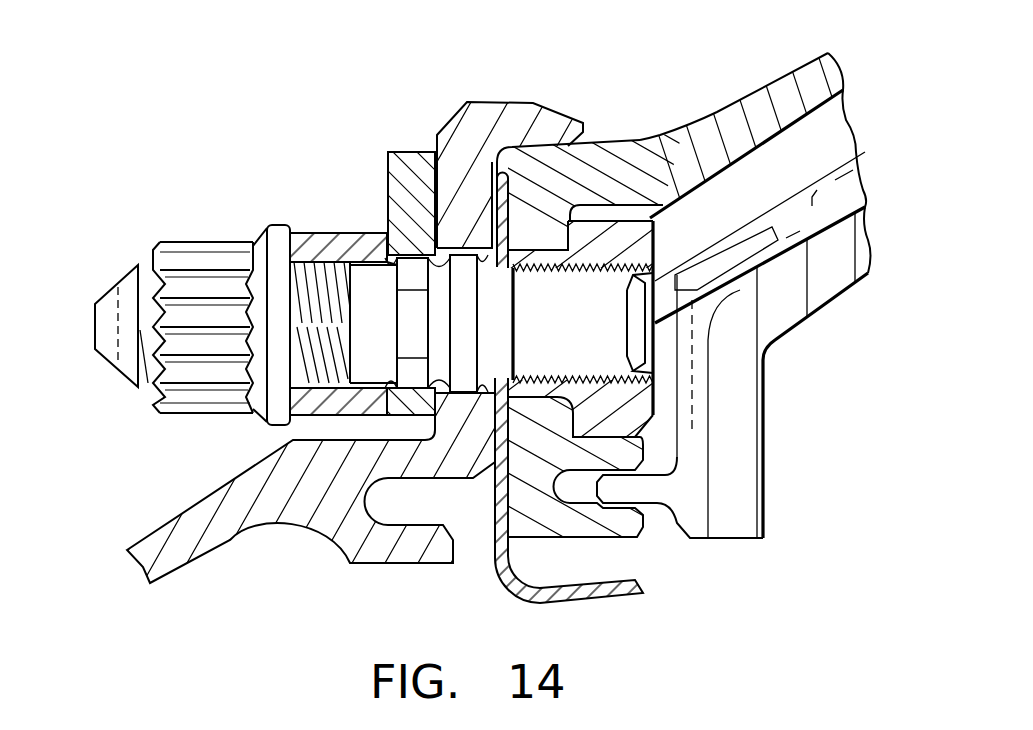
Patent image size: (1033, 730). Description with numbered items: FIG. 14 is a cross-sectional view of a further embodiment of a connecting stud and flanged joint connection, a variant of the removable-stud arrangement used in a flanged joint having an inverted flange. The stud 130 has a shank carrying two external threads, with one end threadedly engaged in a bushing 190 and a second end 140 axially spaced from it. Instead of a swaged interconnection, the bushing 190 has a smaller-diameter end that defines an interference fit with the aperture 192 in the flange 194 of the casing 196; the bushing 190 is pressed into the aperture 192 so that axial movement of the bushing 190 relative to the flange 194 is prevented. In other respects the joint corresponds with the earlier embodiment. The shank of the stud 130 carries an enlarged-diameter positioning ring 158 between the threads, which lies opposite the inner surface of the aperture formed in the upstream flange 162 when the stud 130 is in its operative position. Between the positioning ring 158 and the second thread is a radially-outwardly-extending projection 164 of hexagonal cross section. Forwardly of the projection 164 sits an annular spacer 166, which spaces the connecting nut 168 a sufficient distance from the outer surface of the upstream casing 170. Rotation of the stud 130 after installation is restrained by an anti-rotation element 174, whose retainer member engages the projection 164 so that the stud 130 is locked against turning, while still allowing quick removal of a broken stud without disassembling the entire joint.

The stud 130 is at (615, 347).
The second end 140 is at (112, 360).
The positioning ring 158 is at (467, 292).
The upstream flange 162 is at (483, 105).
The projection 164 is at (420, 343).
The annular spacer 166 is at (322, 245).
The connecting nut 168 is at (197, 258).
The upstream casing 170 is at (202, 547).
The anti-rotation element 174 is at (413, 167).
The bushing 190 is at (650, 242).
The aperture 192 is at (532, 272).
The flange 194 is at (547, 163).
The casing 196 is at (792, 85).